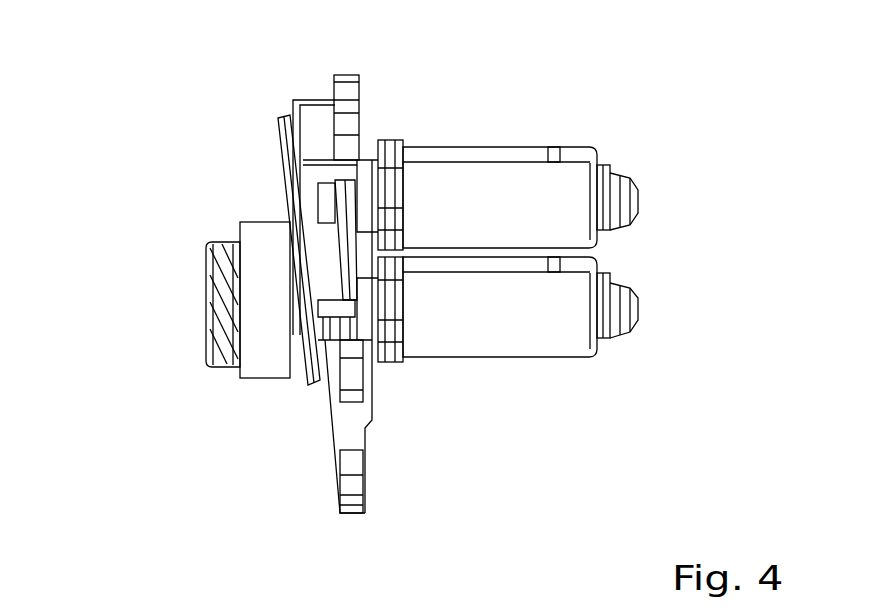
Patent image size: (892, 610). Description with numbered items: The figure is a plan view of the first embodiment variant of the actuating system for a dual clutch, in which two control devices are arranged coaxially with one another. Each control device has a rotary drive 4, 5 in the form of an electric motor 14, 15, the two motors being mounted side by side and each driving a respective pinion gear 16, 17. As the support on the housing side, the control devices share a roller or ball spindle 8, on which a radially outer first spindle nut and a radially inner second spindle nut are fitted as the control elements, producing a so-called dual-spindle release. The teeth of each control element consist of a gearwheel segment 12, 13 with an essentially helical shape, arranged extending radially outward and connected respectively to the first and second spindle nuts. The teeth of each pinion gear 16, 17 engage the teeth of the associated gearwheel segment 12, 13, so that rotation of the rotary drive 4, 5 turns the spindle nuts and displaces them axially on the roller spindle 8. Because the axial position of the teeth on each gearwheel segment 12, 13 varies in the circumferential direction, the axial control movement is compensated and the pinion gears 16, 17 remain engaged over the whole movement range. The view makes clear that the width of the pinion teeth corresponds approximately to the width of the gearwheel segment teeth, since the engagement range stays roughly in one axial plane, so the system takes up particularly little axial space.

The rotary drive 4 is at (565, 144).
The rotary drive 5 is at (566, 359).
The roller or ball spindle 8 is at (220, 283).
The gearwheel segment 12 is at (292, 162).
The gearwheel segment 13 is at (335, 262).
The electric motor 14 is at (560, 197).
The electric motor 15 is at (659, 320).
The pinion gear 16 is at (330, 202).
The pinion gear 17 is at (292, 377).